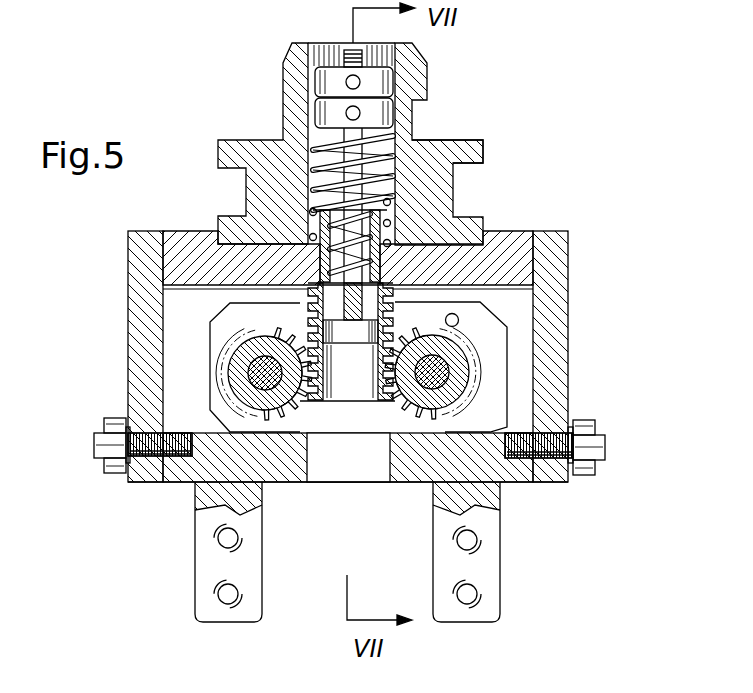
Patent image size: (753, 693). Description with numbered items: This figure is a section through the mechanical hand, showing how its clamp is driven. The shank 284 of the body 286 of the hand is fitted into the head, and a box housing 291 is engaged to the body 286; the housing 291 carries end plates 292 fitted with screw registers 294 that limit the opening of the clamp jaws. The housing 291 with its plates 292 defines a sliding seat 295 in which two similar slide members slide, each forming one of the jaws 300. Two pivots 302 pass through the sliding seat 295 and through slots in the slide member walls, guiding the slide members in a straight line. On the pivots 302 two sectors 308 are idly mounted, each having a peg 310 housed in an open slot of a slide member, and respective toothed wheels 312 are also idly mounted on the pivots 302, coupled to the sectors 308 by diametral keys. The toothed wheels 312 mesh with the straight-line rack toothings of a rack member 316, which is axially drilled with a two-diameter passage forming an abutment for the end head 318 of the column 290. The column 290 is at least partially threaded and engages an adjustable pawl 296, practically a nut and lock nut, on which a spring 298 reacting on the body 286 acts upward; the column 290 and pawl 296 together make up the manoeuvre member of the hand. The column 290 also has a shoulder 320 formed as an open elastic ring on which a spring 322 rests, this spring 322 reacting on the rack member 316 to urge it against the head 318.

The shank 284 is at (415, 77).
The body 286 is at (483, 150).
The column 290 is at (345, 305).
The box housing 291 is at (512, 247).
The end plates 292 is at (562, 270).
The screw registers 294 is at (604, 443).
The sliding seat 295 is at (185, 397).
The adjustable pawl 296 is at (322, 82).
The spring 298 is at (322, 115).
The jaws 300 is at (208, 563).
The pivots 302 is at (442, 408).
The sectors 308 is at (490, 378).
The peg 310 is at (458, 320).
The toothed wheels 312 is at (282, 412).
The rack member 316 is at (310, 320).
The end head 318 is at (363, 327).
The shoulder 320 is at (318, 172).
The spring 322 is at (333, 204).